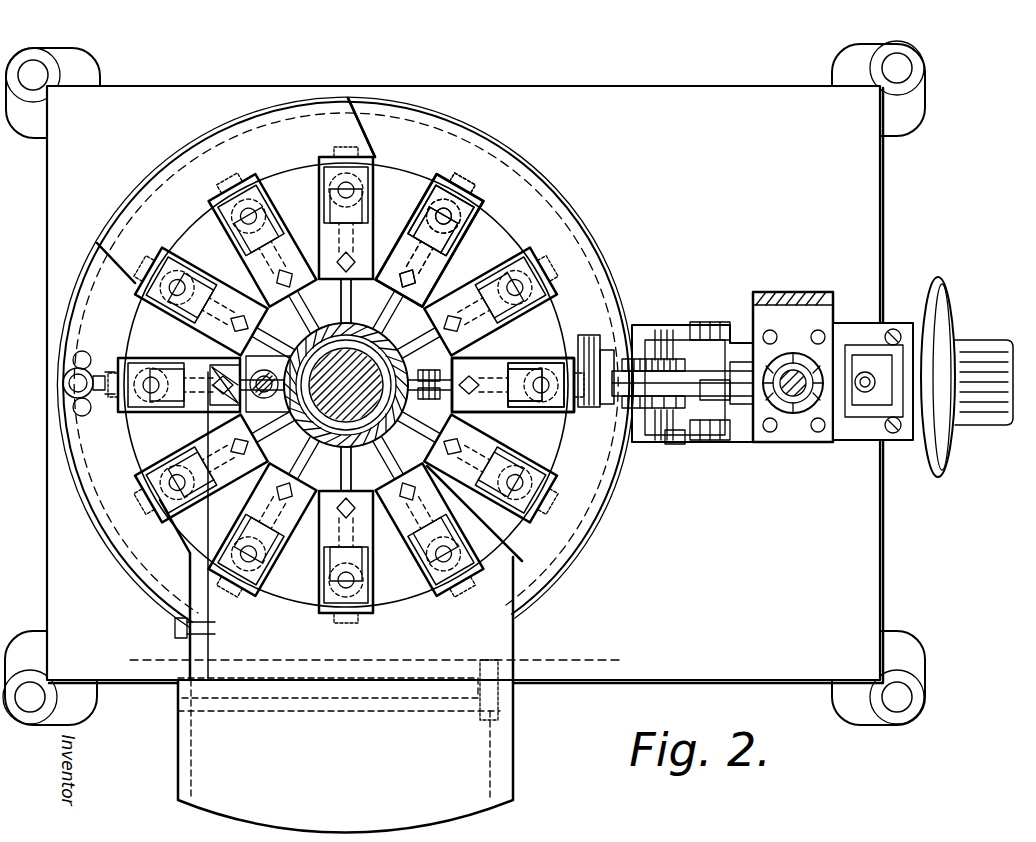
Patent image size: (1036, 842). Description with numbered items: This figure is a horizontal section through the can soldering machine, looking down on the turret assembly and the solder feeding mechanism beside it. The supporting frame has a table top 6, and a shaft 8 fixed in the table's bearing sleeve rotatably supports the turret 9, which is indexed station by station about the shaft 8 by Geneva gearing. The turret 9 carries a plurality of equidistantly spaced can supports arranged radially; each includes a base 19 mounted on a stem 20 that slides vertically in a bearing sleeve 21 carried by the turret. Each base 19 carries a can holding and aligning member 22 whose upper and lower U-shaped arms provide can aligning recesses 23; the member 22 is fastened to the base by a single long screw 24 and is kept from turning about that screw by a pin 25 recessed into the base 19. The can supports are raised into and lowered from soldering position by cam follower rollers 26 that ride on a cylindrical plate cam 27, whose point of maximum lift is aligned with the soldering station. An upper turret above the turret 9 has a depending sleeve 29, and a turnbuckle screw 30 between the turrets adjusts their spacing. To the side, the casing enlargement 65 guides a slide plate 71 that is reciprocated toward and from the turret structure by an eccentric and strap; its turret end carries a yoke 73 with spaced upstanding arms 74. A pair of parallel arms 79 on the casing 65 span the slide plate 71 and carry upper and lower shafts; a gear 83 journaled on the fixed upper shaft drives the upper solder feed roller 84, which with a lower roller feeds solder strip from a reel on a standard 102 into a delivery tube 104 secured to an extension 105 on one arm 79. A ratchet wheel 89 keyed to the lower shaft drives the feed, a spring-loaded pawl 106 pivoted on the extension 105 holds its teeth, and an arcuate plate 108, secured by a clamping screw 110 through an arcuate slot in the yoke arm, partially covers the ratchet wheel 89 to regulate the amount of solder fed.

The table top 6 is at (464, 383).
The shaft 8 is at (357, 385).
The turret 9 is at (365, 385).
The base 19 is at (246, 383).
The stem 20 is at (276, 384).
The bearing sleeve 21 is at (311, 338).
The can holding and aligning member 22 is at (318, 383).
The can aligning recesses 23 is at (275, 378).
The screw 24 is at (325, 408).
The pin 25 is at (188, 361).
The cam follower rollers 26 is at (332, 388).
The cylindrical plate cam 27 is at (345, 368).
The depending sleeve 29 is at (357, 389).
The turnbuckle screw 30 is at (271, 359).
The casing enlargement 65 is at (873, 399).
The slide plate 71 is at (748, 425).
The yoke 73 is at (769, 355).
The upstanding arms 74 is at (709, 378).
The arms 79 is at (692, 383).
The gear 83 is at (653, 330).
The upper solder feed roller 84 is at (616, 459).
The ratchet wheel 89 is at (680, 403).
The standard 102 is at (793, 349).
The delivery tube 104 is at (513, 368).
The extension 105 is at (597, 350).
The pawl 106 is at (598, 404).
The arcuate plate 108 is at (653, 442).
The clamping screw 110 is at (672, 449).